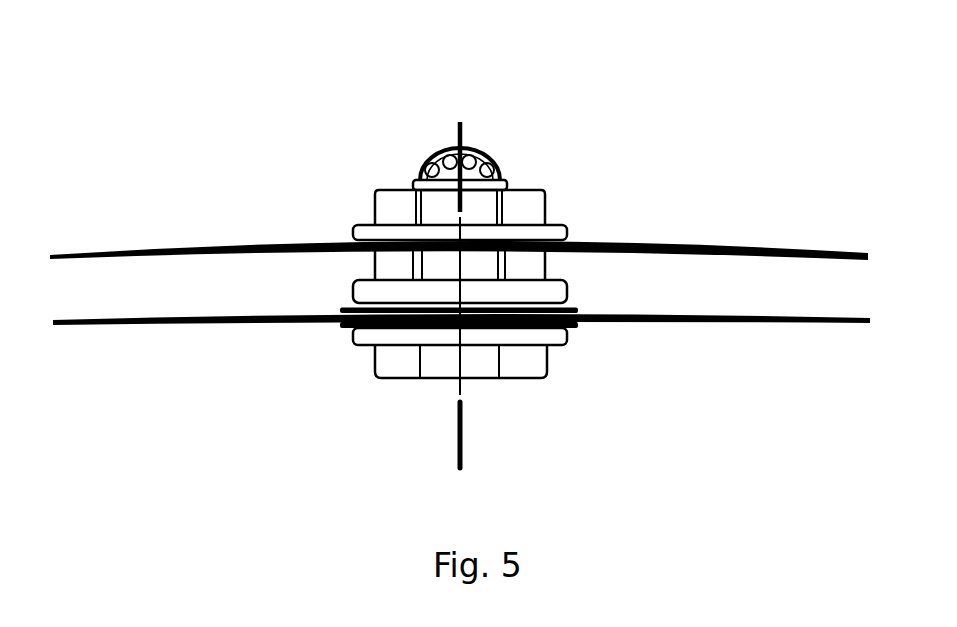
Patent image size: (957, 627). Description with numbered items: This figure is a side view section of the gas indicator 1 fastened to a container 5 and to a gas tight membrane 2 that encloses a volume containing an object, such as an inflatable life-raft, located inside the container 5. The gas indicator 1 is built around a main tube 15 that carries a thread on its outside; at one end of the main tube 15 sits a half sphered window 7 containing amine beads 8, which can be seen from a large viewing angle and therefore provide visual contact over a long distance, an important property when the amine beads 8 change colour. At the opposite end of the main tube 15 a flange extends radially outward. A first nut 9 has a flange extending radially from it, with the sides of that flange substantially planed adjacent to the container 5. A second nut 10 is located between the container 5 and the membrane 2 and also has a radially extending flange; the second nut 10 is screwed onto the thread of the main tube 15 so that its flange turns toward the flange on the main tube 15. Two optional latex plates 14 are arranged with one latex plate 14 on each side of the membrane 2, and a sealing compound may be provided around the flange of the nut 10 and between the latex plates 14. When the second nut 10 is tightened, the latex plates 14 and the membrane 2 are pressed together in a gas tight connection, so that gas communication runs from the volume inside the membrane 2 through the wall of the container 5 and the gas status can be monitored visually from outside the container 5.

The gas indicator 1 is at (280, 162).
The gas tight membrane 2 is at (175, 330).
The container 5 is at (705, 240).
The half sphered window 7 is at (432, 147).
The amine beads 8 is at (490, 160).
The first nut 9 is at (566, 275).
The second nut 10 is at (461, 297).
The latex plate 14 is at (340, 308).
The main tube 15 is at (370, 370).